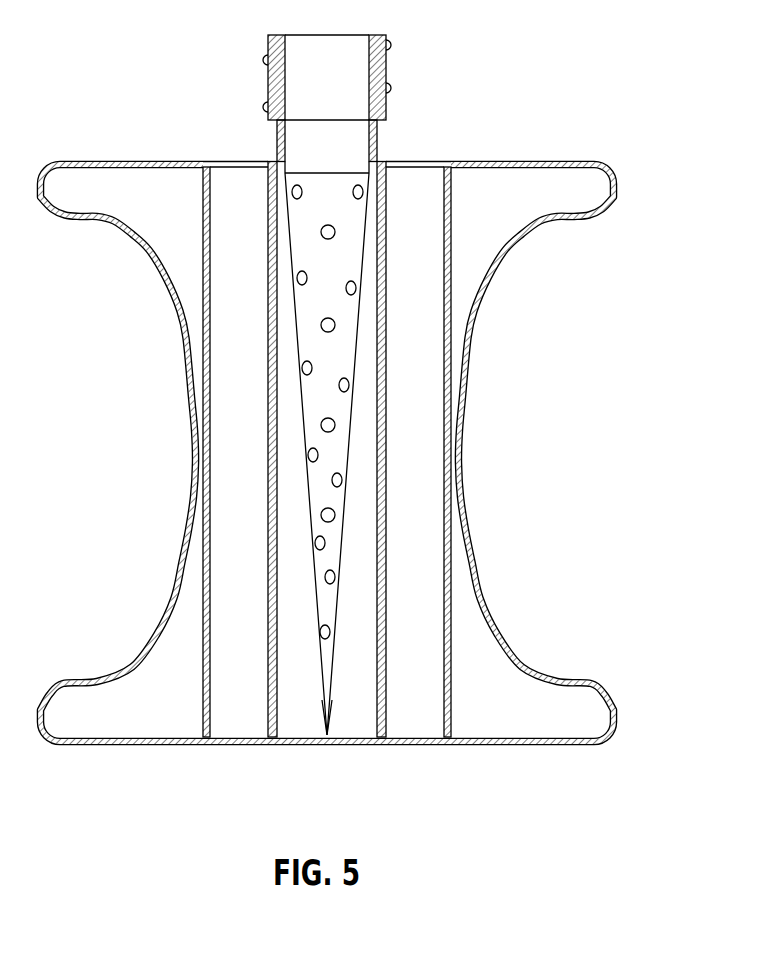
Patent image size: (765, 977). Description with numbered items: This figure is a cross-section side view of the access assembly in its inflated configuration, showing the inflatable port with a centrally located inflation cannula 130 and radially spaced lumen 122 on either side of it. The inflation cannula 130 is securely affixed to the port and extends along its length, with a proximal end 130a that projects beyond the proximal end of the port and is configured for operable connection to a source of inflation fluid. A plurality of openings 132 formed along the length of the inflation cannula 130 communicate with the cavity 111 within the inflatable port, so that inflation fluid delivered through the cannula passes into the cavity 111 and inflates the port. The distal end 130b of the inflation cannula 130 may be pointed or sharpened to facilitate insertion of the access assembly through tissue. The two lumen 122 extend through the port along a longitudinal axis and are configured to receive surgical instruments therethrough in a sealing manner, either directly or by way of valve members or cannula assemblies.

The cavity 111 is at (146, 215).
The lumen 122 is at (238, 153).
The inflation cannula 130 is at (362, 455).
The proximal end 130a is at (327, 150).
The distal end 130b is at (327, 686).
The openings 132 is at (307, 455).